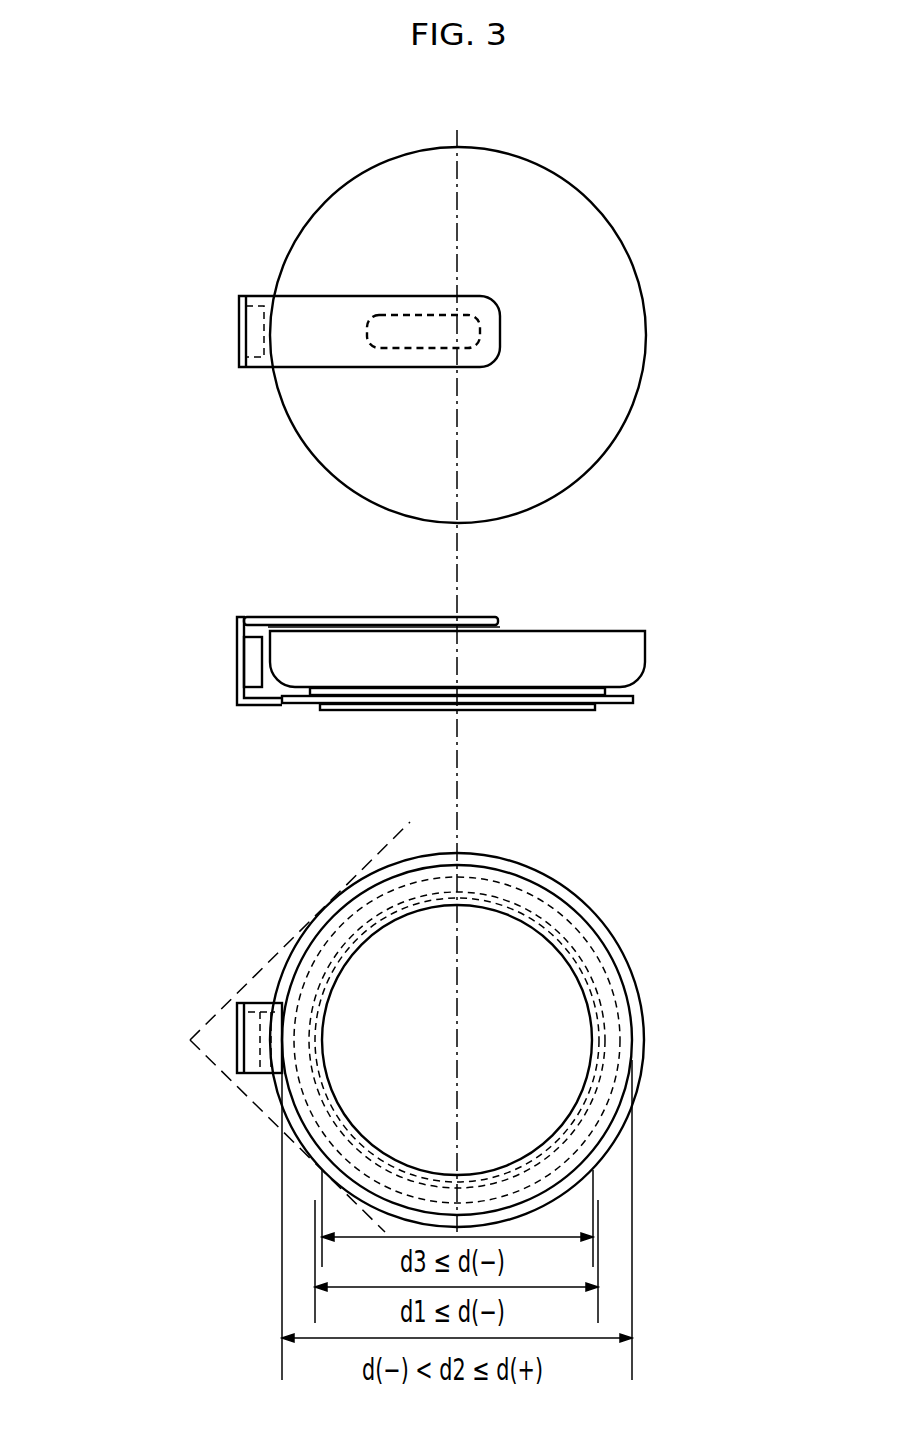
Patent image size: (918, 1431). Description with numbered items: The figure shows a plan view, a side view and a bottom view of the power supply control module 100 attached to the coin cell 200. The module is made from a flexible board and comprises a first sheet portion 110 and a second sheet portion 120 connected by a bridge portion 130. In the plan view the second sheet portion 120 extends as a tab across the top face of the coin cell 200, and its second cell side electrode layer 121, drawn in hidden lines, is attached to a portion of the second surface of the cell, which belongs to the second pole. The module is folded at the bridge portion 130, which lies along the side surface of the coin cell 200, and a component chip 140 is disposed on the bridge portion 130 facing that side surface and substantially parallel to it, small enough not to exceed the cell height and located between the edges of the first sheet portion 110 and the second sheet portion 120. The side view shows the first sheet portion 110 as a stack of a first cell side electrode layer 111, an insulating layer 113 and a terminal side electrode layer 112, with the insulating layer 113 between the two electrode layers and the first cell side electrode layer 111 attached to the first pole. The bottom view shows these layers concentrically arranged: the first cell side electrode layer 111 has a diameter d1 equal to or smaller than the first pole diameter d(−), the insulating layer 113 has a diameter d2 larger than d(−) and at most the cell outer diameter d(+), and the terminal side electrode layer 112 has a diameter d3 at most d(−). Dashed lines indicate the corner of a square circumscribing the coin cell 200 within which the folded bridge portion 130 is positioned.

The power supply control module 100 is at (237, 638).
The first sheet portion 110 is at (747, 645).
The first cell side electrode layer 111 is at (597, 693).
The terminal side electrode layer 112 is at (597, 712).
The insulating layer 113 is at (633, 702).
The second sheet portion 120 is at (345, 307).
The second cell side electrode layer 121 is at (463, 323).
The bridge portion 130 is at (238, 335).
The component chip 140 is at (262, 360).
The coin cell 200 is at (610, 638).